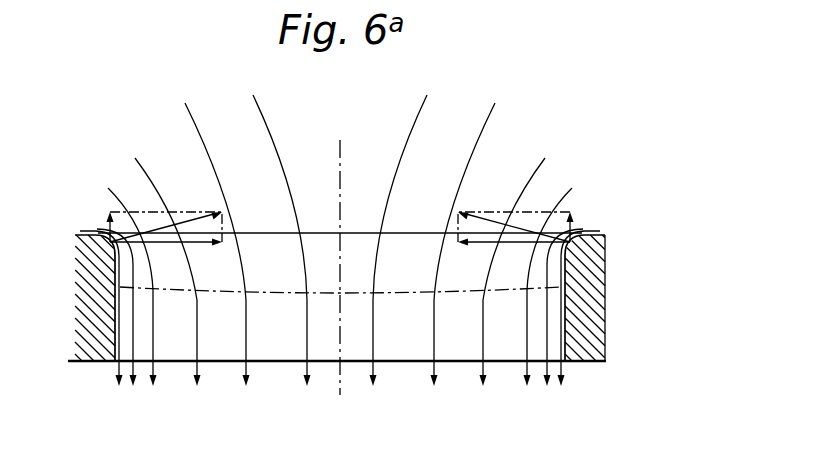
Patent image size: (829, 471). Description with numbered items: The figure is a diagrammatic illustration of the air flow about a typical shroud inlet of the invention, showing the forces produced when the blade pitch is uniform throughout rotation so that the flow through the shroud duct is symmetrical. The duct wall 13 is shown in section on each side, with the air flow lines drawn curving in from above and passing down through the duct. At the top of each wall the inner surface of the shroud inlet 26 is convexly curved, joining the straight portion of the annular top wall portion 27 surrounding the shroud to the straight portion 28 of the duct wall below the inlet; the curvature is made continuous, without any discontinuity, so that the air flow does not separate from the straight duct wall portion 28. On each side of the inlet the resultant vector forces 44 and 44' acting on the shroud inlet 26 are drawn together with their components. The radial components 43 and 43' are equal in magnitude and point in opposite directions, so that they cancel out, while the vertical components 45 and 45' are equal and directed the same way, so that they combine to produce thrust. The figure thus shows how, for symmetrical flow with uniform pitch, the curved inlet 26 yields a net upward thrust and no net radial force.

The die wall 13 is at (583, 318).
The shroud inlet 26 is at (574, 248).
The annular top wall portion 27 is at (77, 233).
The straight portion of the duct wall 28 is at (121, 327).
The radial component 43 is at (166, 258).
The radial component 43' is at (506, 258).
The resultant vector force 44 is at (166, 210).
The resultant vector force 44' is at (514, 211).
The vertical component 45 is at (86, 214).
The vertical component 45' is at (599, 220).